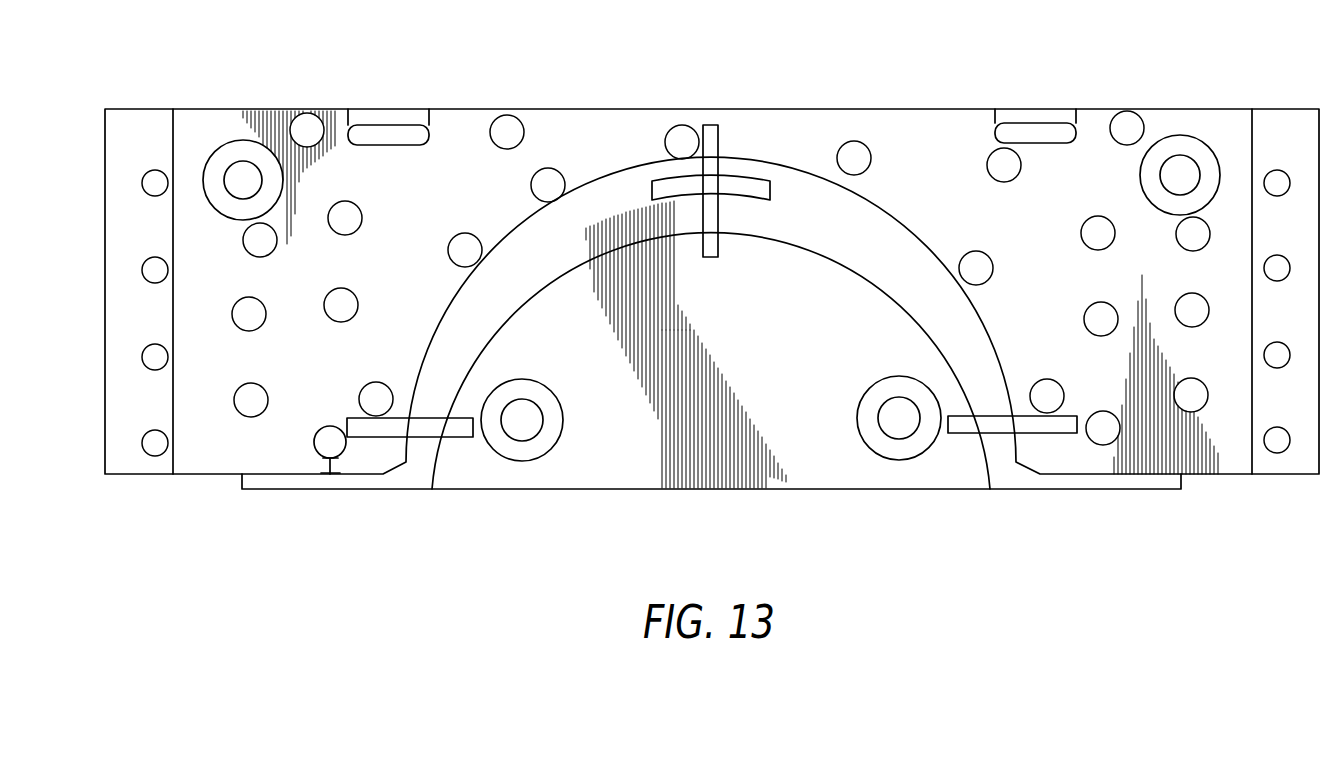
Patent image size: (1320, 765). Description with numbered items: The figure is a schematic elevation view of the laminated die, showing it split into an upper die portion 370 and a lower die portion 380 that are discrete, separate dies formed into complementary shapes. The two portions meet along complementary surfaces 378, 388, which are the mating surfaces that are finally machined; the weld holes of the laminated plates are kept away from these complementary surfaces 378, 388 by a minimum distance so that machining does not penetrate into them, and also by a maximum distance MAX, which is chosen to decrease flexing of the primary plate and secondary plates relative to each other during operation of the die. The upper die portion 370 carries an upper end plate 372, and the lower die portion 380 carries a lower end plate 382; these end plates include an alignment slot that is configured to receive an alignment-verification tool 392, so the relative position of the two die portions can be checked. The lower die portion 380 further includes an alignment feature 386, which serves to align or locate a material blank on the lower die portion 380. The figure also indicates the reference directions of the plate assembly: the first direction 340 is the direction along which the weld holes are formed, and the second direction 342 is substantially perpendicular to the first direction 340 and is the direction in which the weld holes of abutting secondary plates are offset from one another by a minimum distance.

The upper die portion 370 is at (712, 286).
The upper end plate 372 is at (922, 135).
The complementary surface 378 is at (807, 180).
The lower die portion 380 is at (690, 505).
The lower end plate 382 is at (805, 440).
The alignment feature 386 is at (753, 187).
The complementary surface 388 is at (615, 213).
The alignment-verification tool 392 is at (706, 124).
The second direction 342 is at (241, 172).
The first direction 340 is at (380, 127).
The maximum distance MAX is at (320, 467).